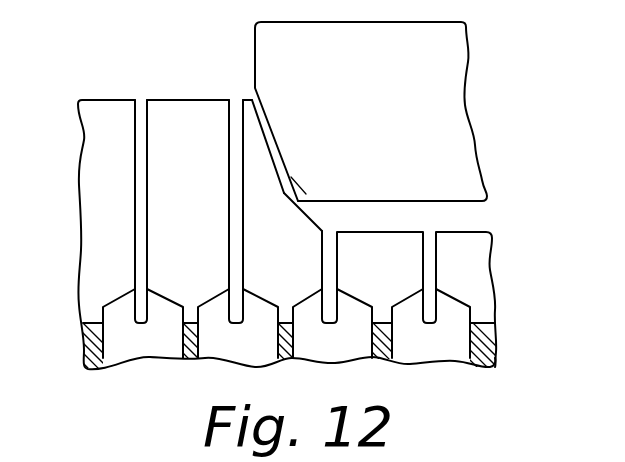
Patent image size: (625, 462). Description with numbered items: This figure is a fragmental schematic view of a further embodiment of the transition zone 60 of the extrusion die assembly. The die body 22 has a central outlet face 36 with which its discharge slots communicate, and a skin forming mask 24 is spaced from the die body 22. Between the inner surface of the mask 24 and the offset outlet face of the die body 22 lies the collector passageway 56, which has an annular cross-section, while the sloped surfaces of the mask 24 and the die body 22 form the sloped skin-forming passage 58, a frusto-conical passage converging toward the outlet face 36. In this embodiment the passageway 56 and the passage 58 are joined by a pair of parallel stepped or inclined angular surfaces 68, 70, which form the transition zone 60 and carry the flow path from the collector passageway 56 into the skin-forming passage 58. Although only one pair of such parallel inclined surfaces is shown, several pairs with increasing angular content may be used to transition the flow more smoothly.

The die body 22 is at (477, 265).
The skin forming mask 24 is at (447, 59).
The central outlet face 36 is at (107, 99).
The collector passageway 56 is at (393, 214).
The sloped skin-forming passage 58 is at (265, 121).
The transition zone 60 is at (292, 193).
The inclined angular surface 68 is at (311, 190).
The inclined angular surface 70 is at (292, 205).